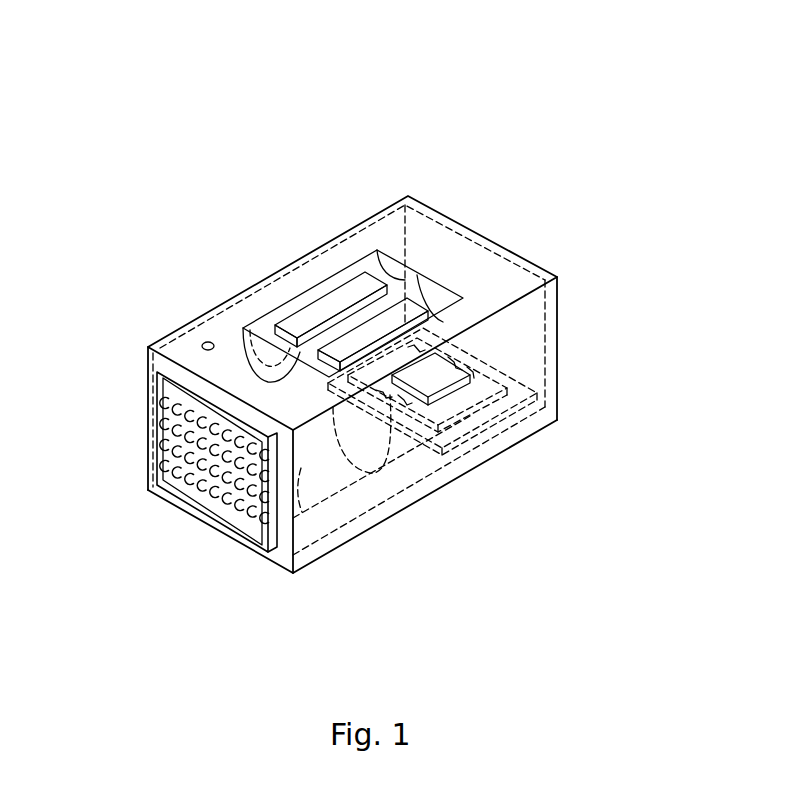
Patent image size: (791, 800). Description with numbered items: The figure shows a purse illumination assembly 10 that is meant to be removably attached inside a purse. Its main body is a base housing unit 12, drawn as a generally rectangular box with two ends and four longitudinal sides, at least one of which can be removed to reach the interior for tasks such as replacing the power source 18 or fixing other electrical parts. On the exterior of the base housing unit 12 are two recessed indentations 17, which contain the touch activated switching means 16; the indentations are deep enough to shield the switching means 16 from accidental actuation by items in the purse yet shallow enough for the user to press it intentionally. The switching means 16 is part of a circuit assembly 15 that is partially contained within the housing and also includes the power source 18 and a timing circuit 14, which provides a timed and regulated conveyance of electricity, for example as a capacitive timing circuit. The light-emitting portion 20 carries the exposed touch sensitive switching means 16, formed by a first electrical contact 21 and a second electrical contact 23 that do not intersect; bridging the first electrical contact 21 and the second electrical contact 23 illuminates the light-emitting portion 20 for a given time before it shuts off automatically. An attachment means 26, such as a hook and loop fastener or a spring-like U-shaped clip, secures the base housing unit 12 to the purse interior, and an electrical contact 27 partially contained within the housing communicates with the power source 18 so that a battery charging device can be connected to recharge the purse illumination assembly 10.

The purse illumination assembly 10 is at (440, 160).
The base housing unit 12 is at (333, 238).
The timing circuit 14 is at (478, 388).
The circuit assembly 15 is at (522, 386).
The touch activated switching means 16 is at (325, 295).
The recessed indentations 17 is at (255, 338).
The power source 18 is at (333, 470).
The light-emitting portion 20 is at (462, 296).
The first electrical contact 21 is at (362, 283).
The second electrical contact 23 is at (430, 323).
The attachment means 26 is at (202, 488).
The electrical contact 27 is at (206, 342).